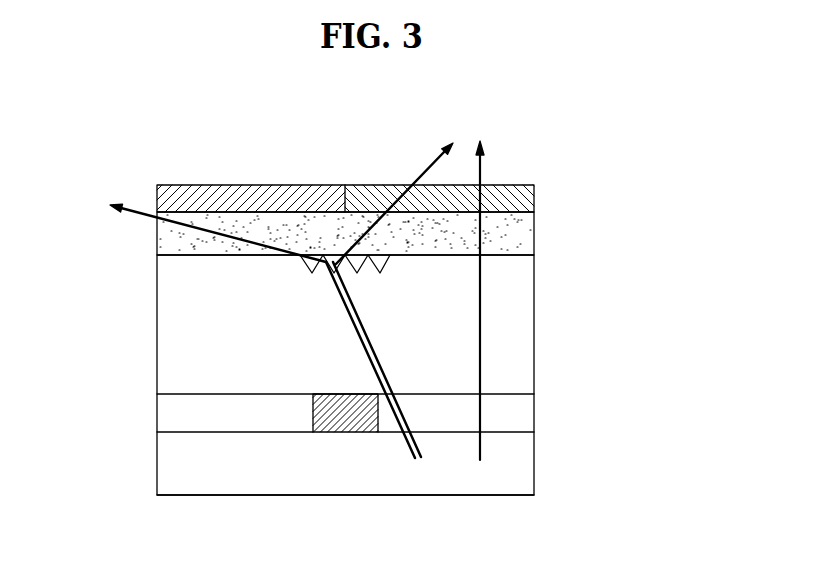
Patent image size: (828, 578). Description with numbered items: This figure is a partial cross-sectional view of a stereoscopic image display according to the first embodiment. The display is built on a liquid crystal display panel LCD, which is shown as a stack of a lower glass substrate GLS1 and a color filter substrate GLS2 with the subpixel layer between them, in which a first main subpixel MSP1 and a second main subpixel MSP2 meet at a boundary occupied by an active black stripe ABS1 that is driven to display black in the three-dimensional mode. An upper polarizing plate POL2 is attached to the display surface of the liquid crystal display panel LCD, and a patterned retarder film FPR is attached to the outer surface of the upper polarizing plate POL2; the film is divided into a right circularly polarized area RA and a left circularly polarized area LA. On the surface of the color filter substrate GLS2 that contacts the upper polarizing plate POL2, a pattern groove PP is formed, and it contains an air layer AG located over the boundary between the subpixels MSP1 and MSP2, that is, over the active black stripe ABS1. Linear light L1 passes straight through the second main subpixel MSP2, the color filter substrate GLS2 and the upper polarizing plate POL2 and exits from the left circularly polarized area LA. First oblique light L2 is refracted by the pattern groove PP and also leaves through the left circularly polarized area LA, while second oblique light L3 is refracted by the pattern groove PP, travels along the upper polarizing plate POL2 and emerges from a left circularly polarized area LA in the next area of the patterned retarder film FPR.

The patterned retarder film FPR is at (381, 173).
The right circularly polarized area RA is at (236, 188).
The left circularly polarized area LA is at (362, 194).
The upper polarizing plate POL2 is at (163, 236).
The color filter substrate GLS2 is at (387, 324).
The lower glass substrate GLS1 is at (525, 473).
The first main subpixel MSP1 is at (168, 421).
The second main subpixel MSP2 is at (525, 427).
The active black stripe ABS1 is at (353, 433).
The liquid crystal display panel LCD is at (376, 398).
The pattern groove PP is at (392, 267).
The air layer AG is at (302, 268).
The linear light L1 is at (495, 299).
The first oblique light L2 is at (393, 297).
The second oblique light L3 is at (249, 325).